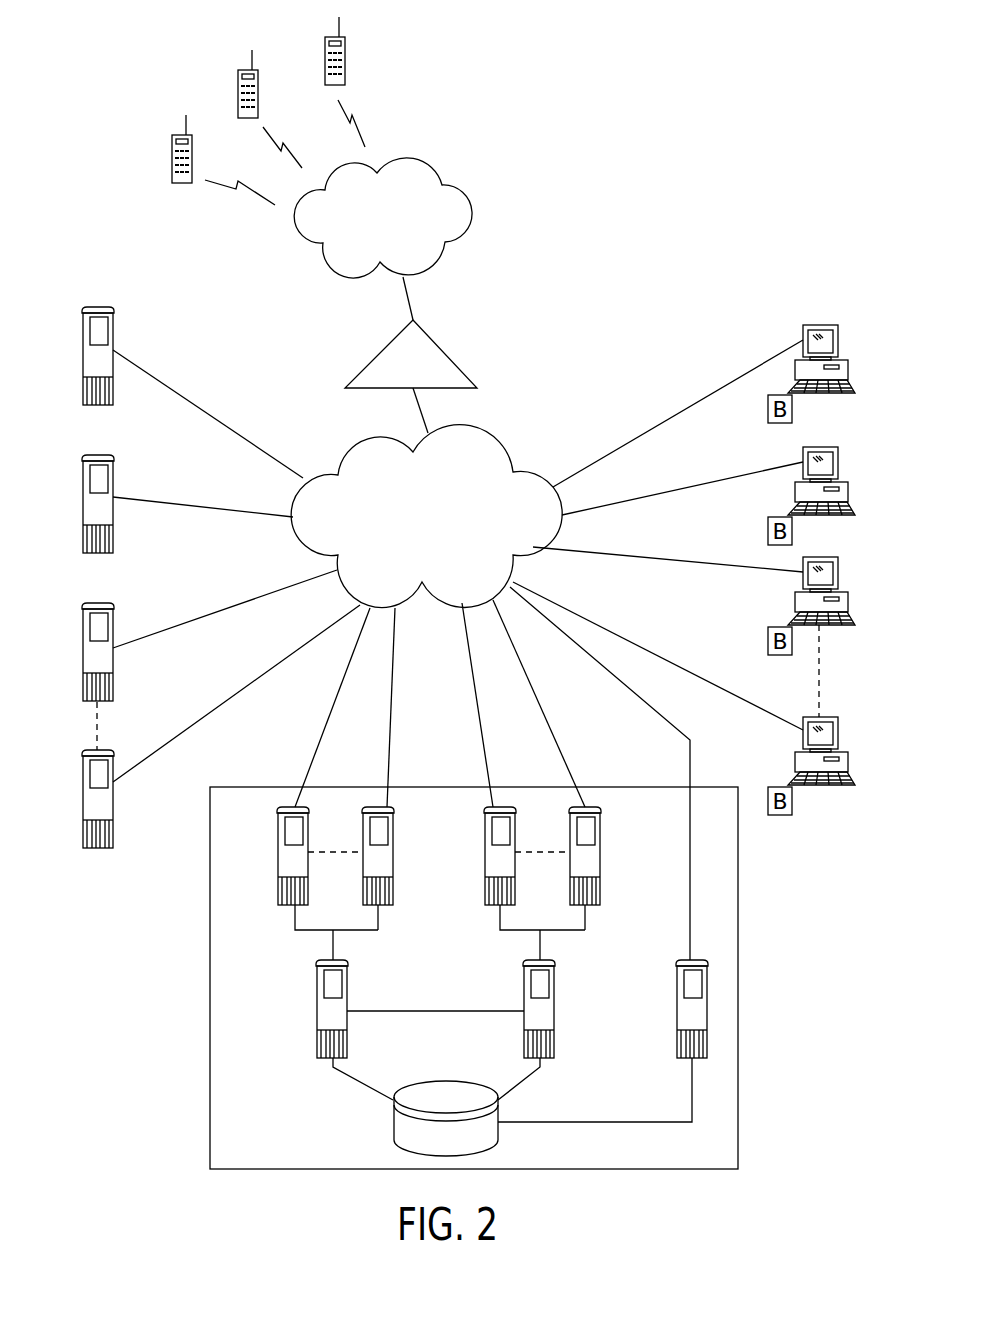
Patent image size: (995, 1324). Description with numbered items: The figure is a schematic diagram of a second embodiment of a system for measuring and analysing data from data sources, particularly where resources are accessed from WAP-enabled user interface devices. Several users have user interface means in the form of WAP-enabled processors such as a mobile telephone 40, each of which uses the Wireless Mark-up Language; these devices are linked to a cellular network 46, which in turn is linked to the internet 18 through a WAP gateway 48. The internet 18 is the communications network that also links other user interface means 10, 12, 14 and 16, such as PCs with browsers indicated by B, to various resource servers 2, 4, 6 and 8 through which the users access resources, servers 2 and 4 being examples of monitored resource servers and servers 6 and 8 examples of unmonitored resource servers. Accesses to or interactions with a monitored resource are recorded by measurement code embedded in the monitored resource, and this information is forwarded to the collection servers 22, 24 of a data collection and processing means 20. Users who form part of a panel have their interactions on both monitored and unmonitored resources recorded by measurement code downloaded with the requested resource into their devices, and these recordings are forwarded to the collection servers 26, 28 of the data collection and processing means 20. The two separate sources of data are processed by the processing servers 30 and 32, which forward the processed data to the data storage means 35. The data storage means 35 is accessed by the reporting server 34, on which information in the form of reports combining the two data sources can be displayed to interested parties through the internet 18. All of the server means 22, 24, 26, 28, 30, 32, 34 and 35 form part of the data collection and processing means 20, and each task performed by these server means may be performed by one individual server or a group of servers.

The resource server 2 is at (83, 335).
The resource server 4 is at (83, 480).
The resource server 6 is at (83, 620).
The resource server 8 is at (83, 768).
The user interface means 10 is at (838, 340).
The user interface means 12 is at (838, 460).
The user interface means 14 is at (838, 570).
The user interface means 16 is at (838, 730).
The communications network 18 is at (438, 529).
The data collection and processing means 20 is at (210, 995).
The collection server 22 is at (393, 832).
The collection server 24 is at (278, 833).
The collection server 26 is at (485, 875).
The collection server 28 is at (600, 832).
The processing server 30 is at (317, 991).
The processing server 32 is at (524, 991).
The reporting server 34 is at (677, 1019).
The data storage means 35 is at (456, 1145).
The mobile telephone 40 is at (172, 147).
The cellular network 46 is at (394, 229).
The WAP gateway 48 is at (423, 372).